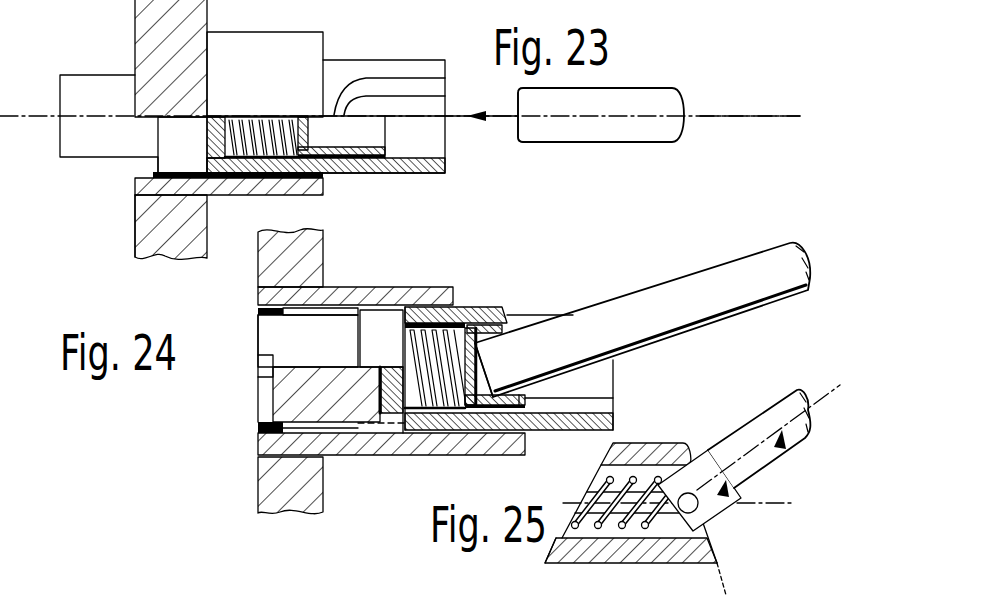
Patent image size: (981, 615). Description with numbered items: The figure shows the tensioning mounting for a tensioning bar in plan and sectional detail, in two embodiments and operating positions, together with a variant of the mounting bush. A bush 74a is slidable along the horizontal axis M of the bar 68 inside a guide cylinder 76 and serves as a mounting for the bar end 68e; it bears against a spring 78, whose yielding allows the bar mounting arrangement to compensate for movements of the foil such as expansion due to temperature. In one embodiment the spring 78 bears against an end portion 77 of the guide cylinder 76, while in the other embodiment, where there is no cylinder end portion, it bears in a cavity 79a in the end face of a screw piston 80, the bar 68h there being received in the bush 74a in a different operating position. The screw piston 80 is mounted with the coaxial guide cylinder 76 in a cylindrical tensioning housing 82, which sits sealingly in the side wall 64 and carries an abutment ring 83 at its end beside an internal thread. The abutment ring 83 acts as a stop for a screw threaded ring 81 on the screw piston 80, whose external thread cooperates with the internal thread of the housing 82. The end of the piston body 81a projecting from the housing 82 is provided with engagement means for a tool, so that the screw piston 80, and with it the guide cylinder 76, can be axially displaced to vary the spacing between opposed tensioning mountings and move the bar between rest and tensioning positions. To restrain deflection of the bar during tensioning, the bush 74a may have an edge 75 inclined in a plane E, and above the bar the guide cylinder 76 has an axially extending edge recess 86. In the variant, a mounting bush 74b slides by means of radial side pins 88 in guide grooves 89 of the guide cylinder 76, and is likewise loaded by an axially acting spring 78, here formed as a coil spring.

In FIG. 23, the side wall 64 is at (140, 14).
In FIG. 24, the side wall 64 is at (272, 497).
In FIG. 23, the bar 68 is at (655, 92).
In FIG. 23, the bar end 68e is at (527, 132).
In FIG. 24, the bar end 68e is at (493, 357).
In FIG. 24, the bar 68h is at (718, 275).
In FIG. 25, the bar 68h is at (786, 447).
In FIG. 23, the mounting bush 74a is at (350, 174).
In FIG. 24, the mounting bush 74a is at (482, 337).
In FIG. 25, the mounting bush 74a is at (667, 438).
In FIG. 25, the mounting bush 74b is at (729, 507).
In FIG. 25, the inclined edge 75 is at (714, 561).
In FIG. 23, the guide cylinder 76 is at (414, 174).
In FIG. 24, the guide cylinder 76 is at (600, 395).
In FIG. 23, the end portion of the cylinder 77 is at (220, 112).
In FIG. 23, the spring 78 is at (290, 115).
In FIG. 24, the spring 78 is at (390, 414).
In FIG. 25, the spring 78 is at (553, 547).
In FIG. 24, the cavity 79a is at (392, 367).
In FIG. 23, the screw piston 80 is at (87, 137).
In FIG. 24, the screw threaded ring 81 is at (370, 312).
In FIG. 24, the piston body 81a is at (318, 353).
In FIG. 23, the tensioning housing 82 is at (187, 198).
In FIG. 24, the tensioning housing 82 is at (398, 295).
In FIG. 23, the abutment ring 83 is at (147, 170).
In FIG. 23, the edge recess 86 is at (432, 101).
In FIG. 25, the radial side pins 88 is at (677, 566).
In FIG. 25, the guide grooves 89 is at (585, 500).
In FIG. 23, the horizontal axis M is at (738, 117).
In FIG. 25, the plane E is at (730, 590).